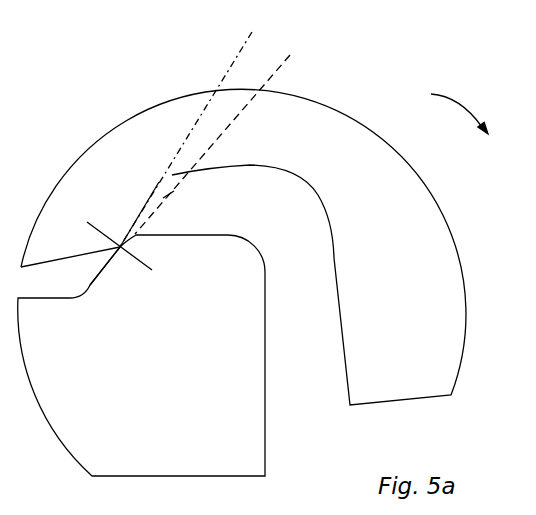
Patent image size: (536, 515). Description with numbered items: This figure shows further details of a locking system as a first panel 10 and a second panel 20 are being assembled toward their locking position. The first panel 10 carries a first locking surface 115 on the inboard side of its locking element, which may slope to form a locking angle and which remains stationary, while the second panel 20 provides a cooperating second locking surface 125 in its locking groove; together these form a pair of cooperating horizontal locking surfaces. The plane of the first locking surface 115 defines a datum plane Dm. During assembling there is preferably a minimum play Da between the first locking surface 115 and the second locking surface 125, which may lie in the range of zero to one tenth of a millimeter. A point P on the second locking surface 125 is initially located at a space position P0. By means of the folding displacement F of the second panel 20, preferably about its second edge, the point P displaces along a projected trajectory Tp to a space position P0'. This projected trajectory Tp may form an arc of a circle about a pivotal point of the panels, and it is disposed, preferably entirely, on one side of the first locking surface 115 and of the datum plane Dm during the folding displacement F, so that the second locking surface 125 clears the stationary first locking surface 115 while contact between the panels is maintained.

The first panel 10 is at (155, 403).
The second panel 20 is at (416, 272).
The first locking surface 115 is at (96, 279).
The second locking surface 125 is at (145, 208).
The projected trajectory Tp is at (244, 52).
The datum plane Dm is at (229, 131).
The play Da is at (135, 261).
The point P is at (167, 200).
The space position P0 is at (140, 169).
The space position P0' is at (77, 244).
The folding displacement F is at (462, 129).